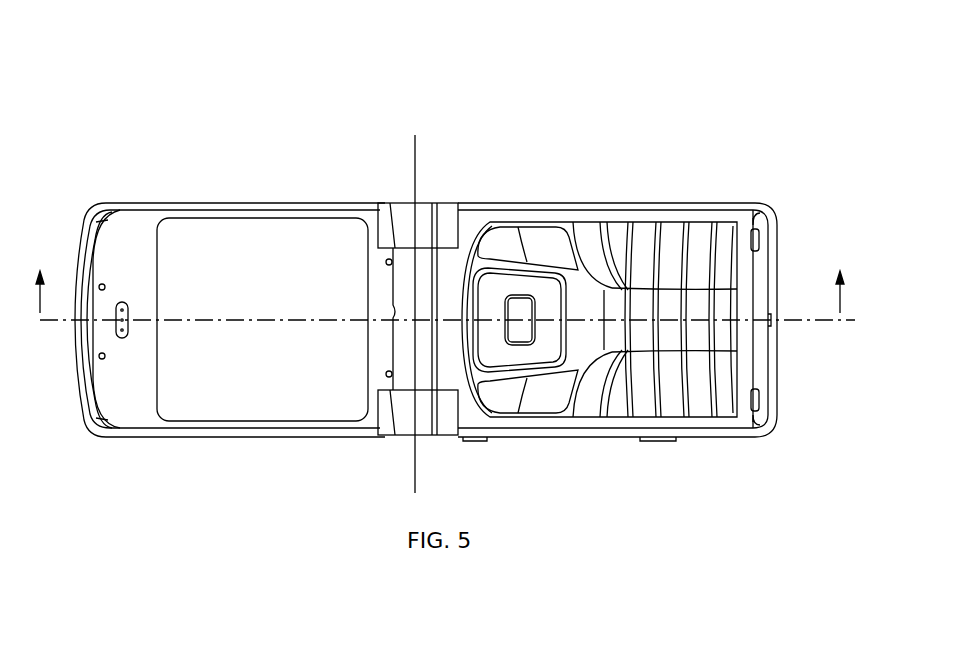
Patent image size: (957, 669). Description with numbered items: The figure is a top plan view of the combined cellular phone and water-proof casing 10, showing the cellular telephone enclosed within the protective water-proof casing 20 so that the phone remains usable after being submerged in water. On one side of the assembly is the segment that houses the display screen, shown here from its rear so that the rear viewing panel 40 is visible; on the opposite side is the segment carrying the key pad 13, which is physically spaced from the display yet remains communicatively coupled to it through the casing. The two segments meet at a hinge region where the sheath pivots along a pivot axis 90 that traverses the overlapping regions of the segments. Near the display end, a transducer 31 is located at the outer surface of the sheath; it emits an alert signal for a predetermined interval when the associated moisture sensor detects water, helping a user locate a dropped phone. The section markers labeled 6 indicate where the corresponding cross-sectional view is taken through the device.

The combined cellular phone and water-proof casing 10 is at (446, 86).
The key pad 13 is at (638, 322).
The protective water-proof casing 20 is at (646, 202).
The transducer 31 is at (122, 302).
The rear viewing panel 40 is at (272, 297).
The pivot axis 90 is at (415, 180).
The section view indicator 6- 6 is at (439, 280).